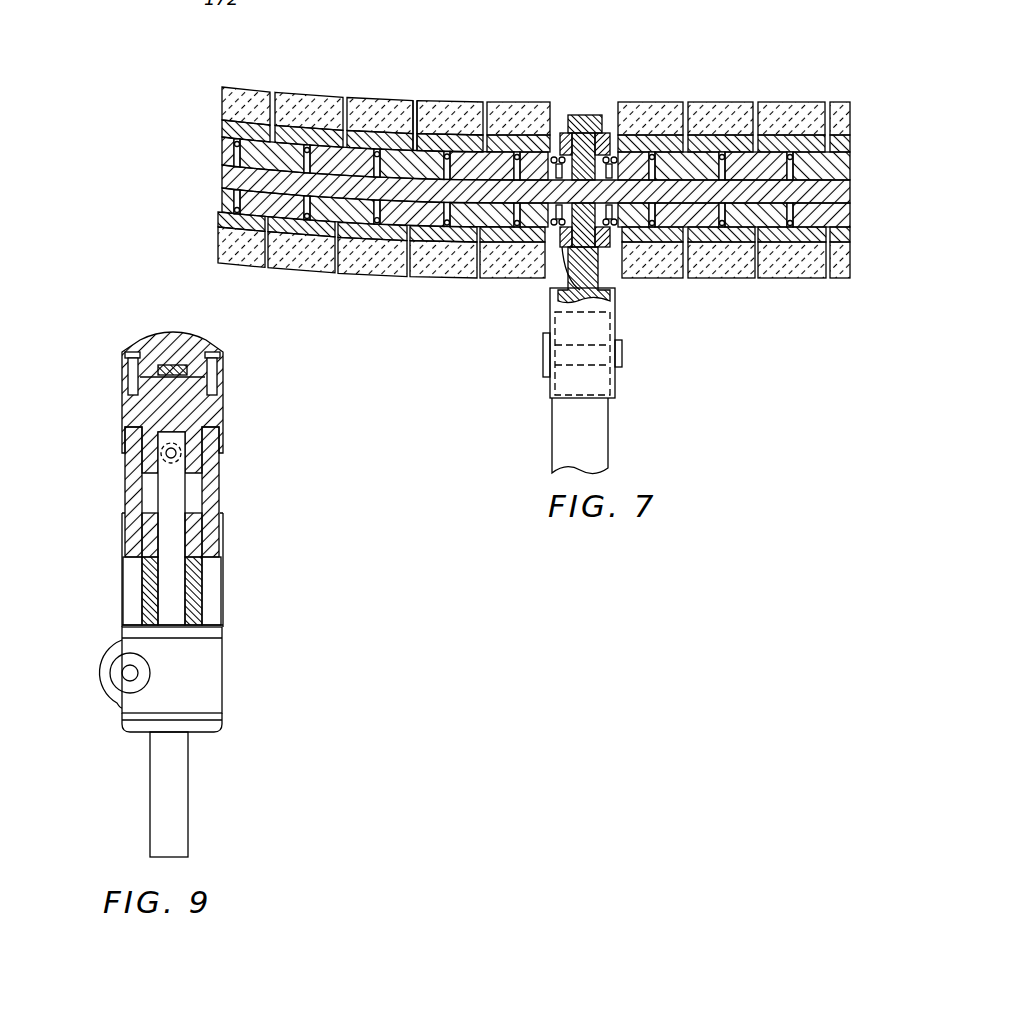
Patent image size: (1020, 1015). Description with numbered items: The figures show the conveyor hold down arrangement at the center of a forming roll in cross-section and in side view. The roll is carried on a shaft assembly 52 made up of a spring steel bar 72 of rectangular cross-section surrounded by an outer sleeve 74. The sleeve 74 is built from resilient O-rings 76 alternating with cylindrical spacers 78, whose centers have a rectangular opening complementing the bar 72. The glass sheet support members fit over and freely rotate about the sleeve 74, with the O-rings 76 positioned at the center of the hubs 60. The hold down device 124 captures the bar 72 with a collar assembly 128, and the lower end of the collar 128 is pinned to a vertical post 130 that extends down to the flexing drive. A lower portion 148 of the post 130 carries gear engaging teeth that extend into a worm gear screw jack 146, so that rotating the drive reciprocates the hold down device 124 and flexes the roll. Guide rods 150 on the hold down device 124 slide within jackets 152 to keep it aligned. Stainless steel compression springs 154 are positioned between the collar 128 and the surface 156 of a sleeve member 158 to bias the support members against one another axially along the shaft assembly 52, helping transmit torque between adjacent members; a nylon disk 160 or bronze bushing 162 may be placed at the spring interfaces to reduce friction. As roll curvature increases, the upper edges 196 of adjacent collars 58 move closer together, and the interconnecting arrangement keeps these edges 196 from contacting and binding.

In FIG. 7, the shaft assembly 52 is at (738, 150).
In FIG. 7, the collar 58 is at (222, 92).
In FIG. 7, the hub 60 is at (226, 128).
In FIG. 7, the bar 72 is at (230, 172).
In FIG. 9, the bar 72 is at (158, 368).
In FIG. 7, the outer sleeve 74 is at (297, 96).
In FIG. 7, the O-ring 76 is at (311, 212).
In FIG. 7, the cylindrical spacer 78 is at (230, 150).
In FIG. 7, the hold down device 124 is at (550, 312).
In FIG. 9, the hold down device 124 is at (77, 422).
In FIG. 7, the collar assembly 128 is at (585, 115).
In FIG. 9, the collar assembly 128 is at (150, 337).
In FIG. 7, the vertical post 130 is at (610, 422).
In FIG. 9, the vertical post 130 is at (187, 501).
In FIG. 9, the worm gear screw jack 146 is at (223, 672).
In FIG. 9, the lower portion of post 148 is at (188, 780).
In FIG. 9, the guide rod 150 is at (124, 490).
In FIG. 9, the jacket 152 is at (123, 579).
In FIG. 7, the compression spring 154 is at (561, 150).
In FIG. 7, the surface of sleeve member 156 is at (552, 172).
In FIG. 7, the sleeve member 158 is at (613, 228).
In FIG. 7, the nylon disk 160 is at (554, 157).
In FIG. 7, the bronze bushing 162 is at (597, 250).
In FIG. 7, the upper edge of collar 196 is at (409, 100).